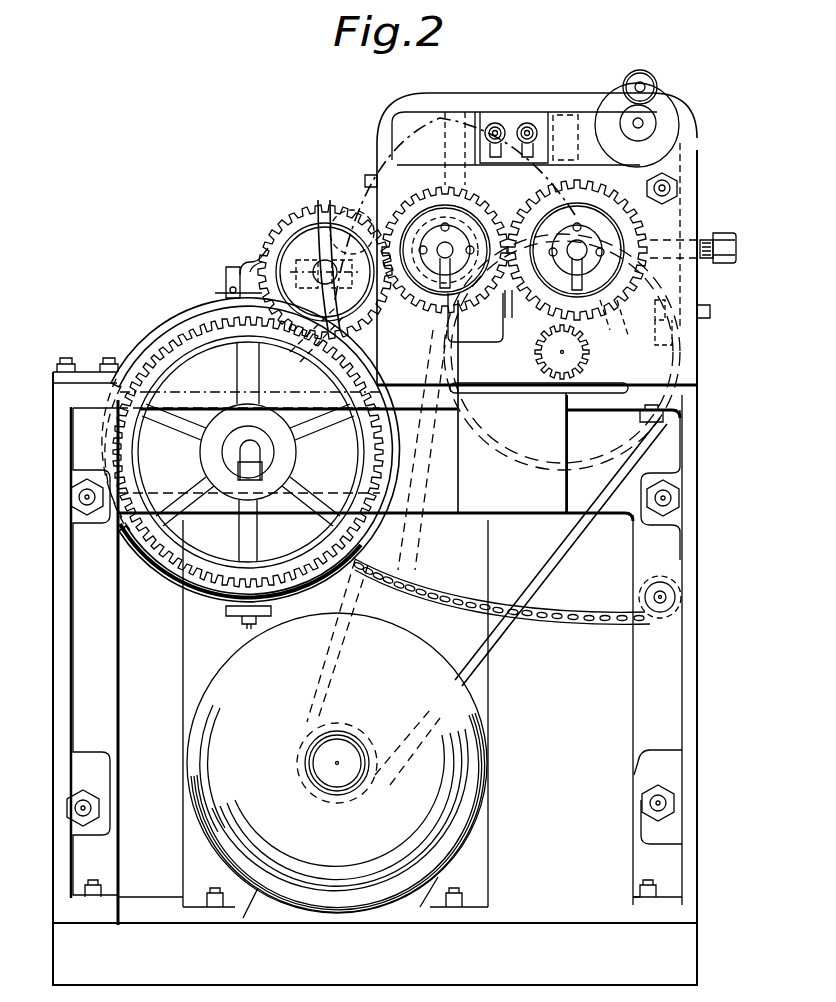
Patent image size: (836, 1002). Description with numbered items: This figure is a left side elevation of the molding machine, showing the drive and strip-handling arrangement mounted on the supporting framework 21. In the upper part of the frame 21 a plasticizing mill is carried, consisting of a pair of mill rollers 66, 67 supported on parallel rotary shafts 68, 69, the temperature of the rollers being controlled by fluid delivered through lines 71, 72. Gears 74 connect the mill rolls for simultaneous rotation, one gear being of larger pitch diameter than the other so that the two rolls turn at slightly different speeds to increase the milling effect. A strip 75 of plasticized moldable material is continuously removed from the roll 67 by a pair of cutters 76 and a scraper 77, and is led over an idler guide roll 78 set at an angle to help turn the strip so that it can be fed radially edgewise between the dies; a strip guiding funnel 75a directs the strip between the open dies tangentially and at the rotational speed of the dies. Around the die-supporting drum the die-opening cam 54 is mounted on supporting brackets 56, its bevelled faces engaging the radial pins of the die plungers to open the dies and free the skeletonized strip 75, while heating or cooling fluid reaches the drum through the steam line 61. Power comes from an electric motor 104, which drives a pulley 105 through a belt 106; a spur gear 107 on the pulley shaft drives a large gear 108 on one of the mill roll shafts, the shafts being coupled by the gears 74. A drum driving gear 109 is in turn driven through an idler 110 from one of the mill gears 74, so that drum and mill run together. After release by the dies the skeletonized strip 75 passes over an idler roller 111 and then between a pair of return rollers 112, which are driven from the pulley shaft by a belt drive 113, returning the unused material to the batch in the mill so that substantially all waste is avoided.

The supporting framework 21 is at (672, 650).
The die-opening cam 54 is at (168, 325).
The supporting brackets 56 is at (237, 613).
The steam line 61 is at (247, 500).
The mill roller 66 is at (592, 356).
The mill roller 67 is at (478, 318).
The rotary shaft 68 is at (577, 250).
The rotary shaft 69 is at (445, 250).
The fluid line 71 is at (680, 282).
The fluid line 72 is at (432, 298).
The gears 74 is at (512, 297).
The strip of plasticized moldable material 75 is at (260, 250).
The strip guiding funnel 75a is at (317, 347).
The cutters 76 is at (348, 210).
The scraper 77 is at (410, 190).
The idler guide roll 78 is at (244, 262).
The electric motor 104 is at (468, 729).
The pulley 105 is at (533, 473).
The belt 106 is at (560, 543).
The spur gear 107 is at (593, 380).
The large gear 108 is at (500, 393).
The drum driving gear 109 is at (197, 570).
The idler 110 is at (302, 212).
The idler roller 111 is at (642, 592).
The return rollers 112 is at (652, 112).
The belt drive 113 is at (703, 226).